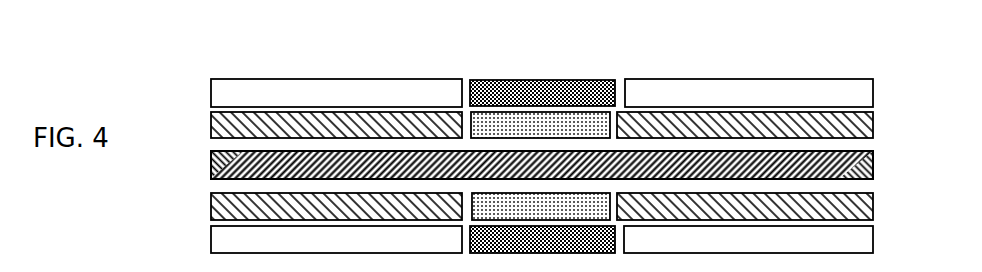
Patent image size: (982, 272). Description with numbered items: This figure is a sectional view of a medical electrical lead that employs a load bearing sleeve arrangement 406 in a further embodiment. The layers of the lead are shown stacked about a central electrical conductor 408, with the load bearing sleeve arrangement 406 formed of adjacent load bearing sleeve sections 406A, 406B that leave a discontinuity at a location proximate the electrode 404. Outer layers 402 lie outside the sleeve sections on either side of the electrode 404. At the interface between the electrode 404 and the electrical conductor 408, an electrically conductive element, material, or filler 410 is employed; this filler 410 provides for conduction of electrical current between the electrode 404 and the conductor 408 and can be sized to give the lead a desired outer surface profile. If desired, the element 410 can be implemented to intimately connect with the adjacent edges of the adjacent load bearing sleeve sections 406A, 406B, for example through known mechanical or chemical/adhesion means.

The substrate 402 is at (747, 57).
The electrode 404 is at (523, 80).
The load bearing sleeve arrangement 406 is at (527, 82).
The load bearing sleeve section 406A is at (388, 125).
The load bearing sleeve section 406B is at (793, 132).
The electrical conductor 408 is at (211, 171).
The electrically conductive element, material, or filler 410 is at (590, 137).